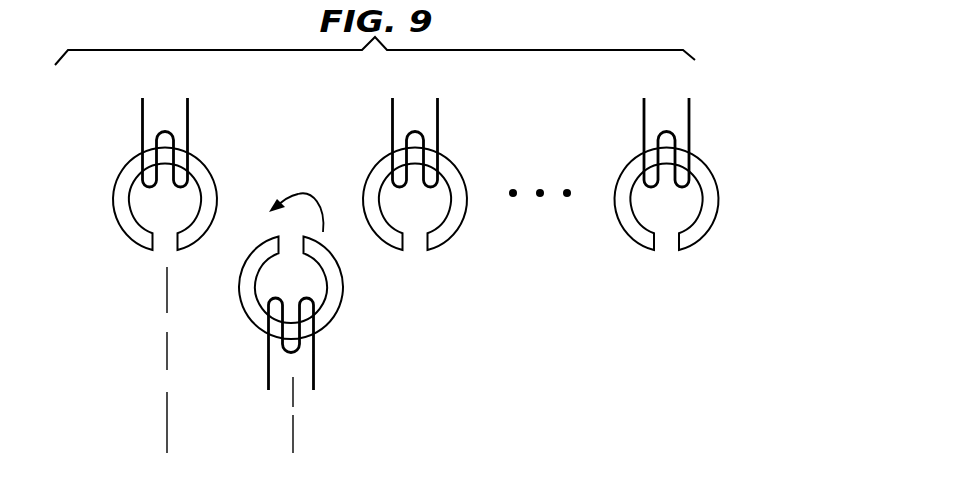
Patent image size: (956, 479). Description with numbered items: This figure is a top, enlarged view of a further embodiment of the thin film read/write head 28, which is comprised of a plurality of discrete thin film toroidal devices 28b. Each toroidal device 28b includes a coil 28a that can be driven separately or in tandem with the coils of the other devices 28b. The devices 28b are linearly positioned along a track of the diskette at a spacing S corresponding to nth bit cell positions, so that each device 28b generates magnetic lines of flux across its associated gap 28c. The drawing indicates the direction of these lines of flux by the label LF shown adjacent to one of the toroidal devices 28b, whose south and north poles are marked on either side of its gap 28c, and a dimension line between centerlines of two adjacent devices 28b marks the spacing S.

The thin film read/write head 28 is at (95, 195).
The coil 28a is at (188, 123).
The thin film toroidal device 28b is at (383, 240).
The gap 28c is at (654, 247).
The magnetic flux direction LF is at (296, 198).
The spacing S is at (168, 437).